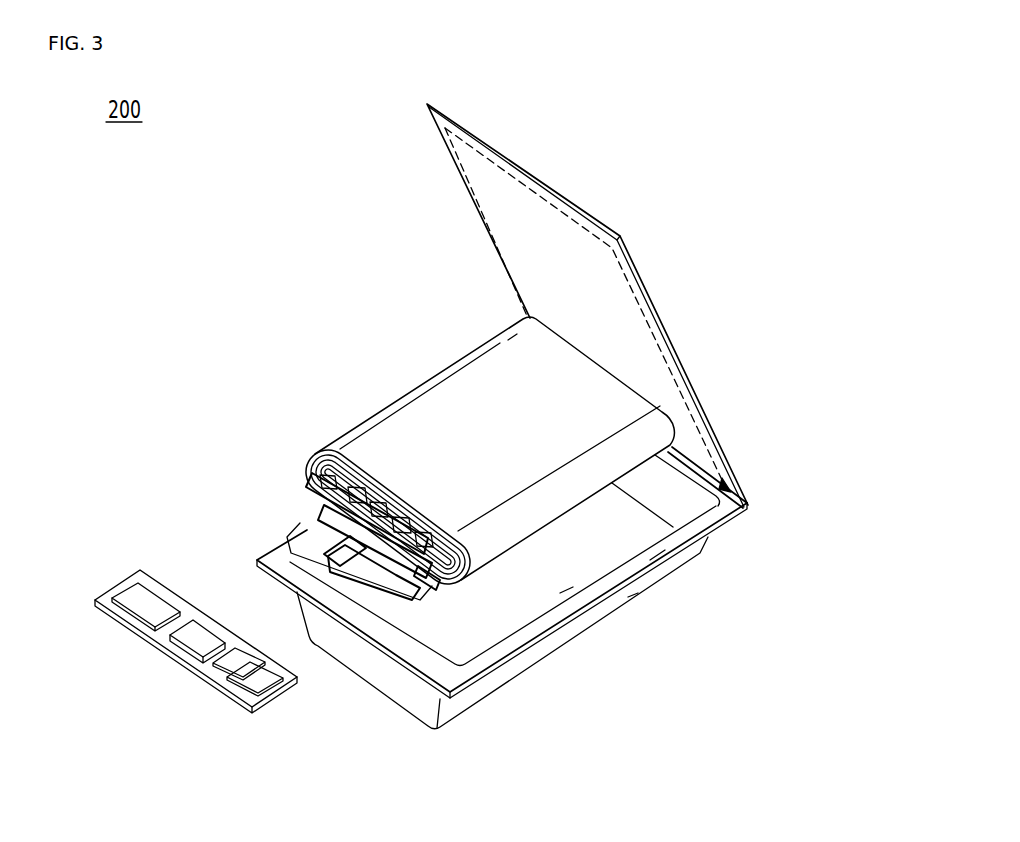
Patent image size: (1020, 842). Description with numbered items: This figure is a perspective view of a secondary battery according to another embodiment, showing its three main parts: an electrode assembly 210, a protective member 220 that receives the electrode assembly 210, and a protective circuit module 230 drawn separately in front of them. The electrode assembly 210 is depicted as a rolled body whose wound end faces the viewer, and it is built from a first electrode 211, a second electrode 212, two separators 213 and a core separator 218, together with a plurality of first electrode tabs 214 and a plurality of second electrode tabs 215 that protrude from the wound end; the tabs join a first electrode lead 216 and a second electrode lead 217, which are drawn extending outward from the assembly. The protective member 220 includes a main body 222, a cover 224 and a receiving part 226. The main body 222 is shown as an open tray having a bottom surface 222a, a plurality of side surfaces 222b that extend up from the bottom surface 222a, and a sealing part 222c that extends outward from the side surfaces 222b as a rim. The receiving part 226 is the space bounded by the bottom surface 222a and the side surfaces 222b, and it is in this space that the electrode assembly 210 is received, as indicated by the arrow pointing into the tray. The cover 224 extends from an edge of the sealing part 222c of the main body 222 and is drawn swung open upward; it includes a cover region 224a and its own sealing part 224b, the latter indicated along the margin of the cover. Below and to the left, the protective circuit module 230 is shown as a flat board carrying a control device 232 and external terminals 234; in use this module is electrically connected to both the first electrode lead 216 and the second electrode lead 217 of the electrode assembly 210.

The electrode assembly 210 is at (300, 352).
The first electrode 211 is at (314, 450).
The second electrode 212 is at (307, 460).
The separators 213 is at (308, 458).
The first electrode tabs 214 is at (320, 517).
The second electrode tabs 215 is at (298, 520).
The first electrode lead 216 is at (310, 558).
The second electrode lead 217 is at (255, 558).
The core separator 218 is at (413, 577).
The protective member 220 is at (852, 377).
The main body 222 is at (797, 590).
The bottom surface 222a is at (573, 587).
The side surfaces 222b is at (638, 593).
The sealing part 222c is at (665, 550).
The cover 224 is at (797, 350).
The cover region 224a is at (665, 380).
The sealing part 224b is at (722, 457).
The receiving part 226 is at (640, 528).
The protective circuit module 230 is at (83, 676).
The control device 232 is at (188, 633).
The external terminals 234 is at (237, 677).